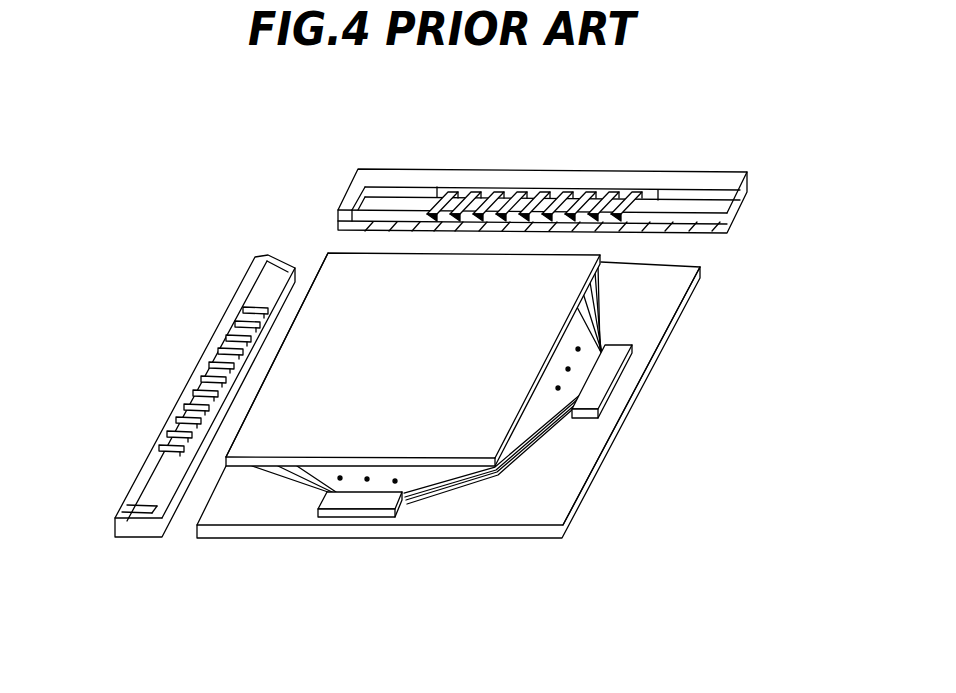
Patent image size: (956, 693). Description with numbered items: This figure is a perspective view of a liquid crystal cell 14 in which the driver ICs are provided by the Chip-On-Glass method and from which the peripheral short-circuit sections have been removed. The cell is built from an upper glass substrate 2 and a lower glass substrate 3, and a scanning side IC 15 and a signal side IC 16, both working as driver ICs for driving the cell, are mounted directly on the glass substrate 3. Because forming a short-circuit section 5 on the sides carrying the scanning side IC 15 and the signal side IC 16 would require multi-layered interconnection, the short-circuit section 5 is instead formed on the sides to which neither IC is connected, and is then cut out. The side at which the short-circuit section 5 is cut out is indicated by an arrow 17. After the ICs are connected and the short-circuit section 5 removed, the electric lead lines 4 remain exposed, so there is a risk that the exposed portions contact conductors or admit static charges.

The upper glass substrate 2 is at (332, 273).
The lower glass substrate 3 is at (598, 438).
The electric lead lines 4 is at (537, 410).
The short-circuit section 5 is at (512, 178).
The liquid crystal cell 14 is at (495, 380).
The scanning side IC 15 is at (617, 358).
The signal side IC 16 is at (347, 503).
The arrow 17 is at (300, 294).